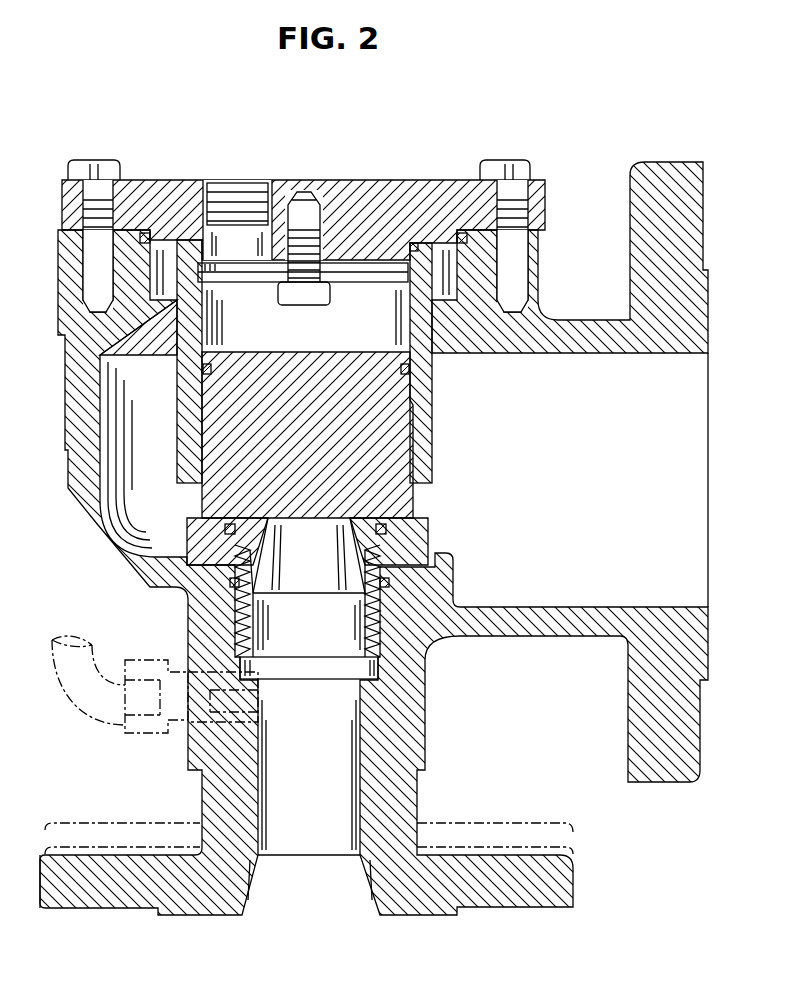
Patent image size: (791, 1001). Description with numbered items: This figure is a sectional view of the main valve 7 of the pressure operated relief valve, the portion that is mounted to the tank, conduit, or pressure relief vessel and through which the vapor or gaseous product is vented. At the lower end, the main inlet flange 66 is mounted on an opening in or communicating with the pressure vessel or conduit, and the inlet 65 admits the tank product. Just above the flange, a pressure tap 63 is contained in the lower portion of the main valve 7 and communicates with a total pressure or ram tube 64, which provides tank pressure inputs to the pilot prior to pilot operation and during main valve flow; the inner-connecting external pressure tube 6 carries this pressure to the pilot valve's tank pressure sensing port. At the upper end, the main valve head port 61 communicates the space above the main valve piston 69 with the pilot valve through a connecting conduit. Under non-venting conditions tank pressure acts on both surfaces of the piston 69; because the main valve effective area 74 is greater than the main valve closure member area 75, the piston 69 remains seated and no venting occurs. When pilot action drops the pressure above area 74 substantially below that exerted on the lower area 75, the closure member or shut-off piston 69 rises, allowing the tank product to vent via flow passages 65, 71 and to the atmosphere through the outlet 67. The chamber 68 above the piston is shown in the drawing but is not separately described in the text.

The external pressure tube 6 is at (75, 705).
The main valve 7 is at (548, 905).
The main valve head port 61 is at (248, 185).
The pressure tap 63 is at (182, 735).
The total pressure or ram tube 64 is at (270, 722).
The inlet 65 is at (322, 895).
The main inlet flange 66 is at (108, 908).
The outlet 67 is at (580, 480).
The pressure chamber 68 is at (360, 338).
The main valve piston 69 is at (314, 438).
The flow passage 71 is at (320, 576).
The main valve effective area 74 is at (290, 358).
The main valve closure member area 75 is at (288, 522).